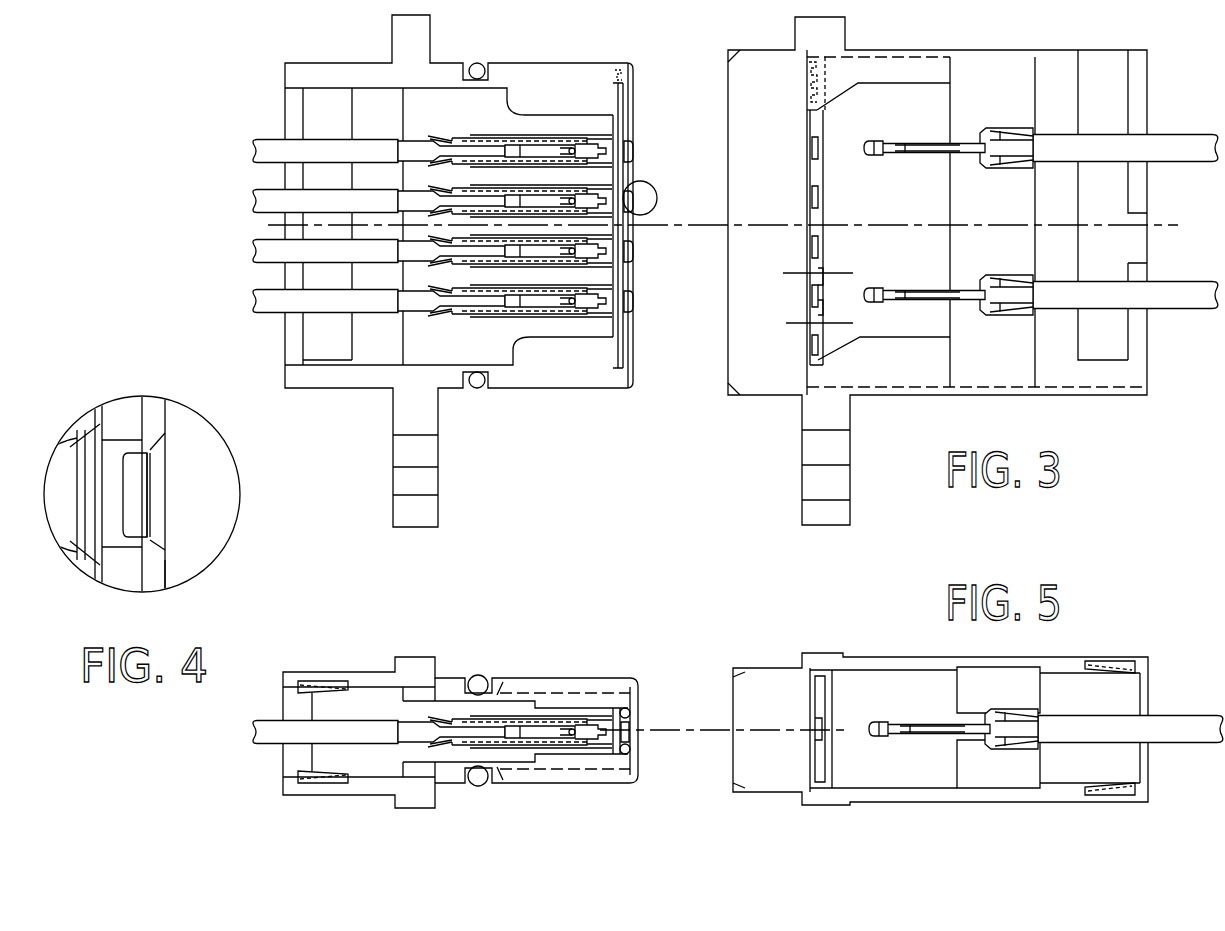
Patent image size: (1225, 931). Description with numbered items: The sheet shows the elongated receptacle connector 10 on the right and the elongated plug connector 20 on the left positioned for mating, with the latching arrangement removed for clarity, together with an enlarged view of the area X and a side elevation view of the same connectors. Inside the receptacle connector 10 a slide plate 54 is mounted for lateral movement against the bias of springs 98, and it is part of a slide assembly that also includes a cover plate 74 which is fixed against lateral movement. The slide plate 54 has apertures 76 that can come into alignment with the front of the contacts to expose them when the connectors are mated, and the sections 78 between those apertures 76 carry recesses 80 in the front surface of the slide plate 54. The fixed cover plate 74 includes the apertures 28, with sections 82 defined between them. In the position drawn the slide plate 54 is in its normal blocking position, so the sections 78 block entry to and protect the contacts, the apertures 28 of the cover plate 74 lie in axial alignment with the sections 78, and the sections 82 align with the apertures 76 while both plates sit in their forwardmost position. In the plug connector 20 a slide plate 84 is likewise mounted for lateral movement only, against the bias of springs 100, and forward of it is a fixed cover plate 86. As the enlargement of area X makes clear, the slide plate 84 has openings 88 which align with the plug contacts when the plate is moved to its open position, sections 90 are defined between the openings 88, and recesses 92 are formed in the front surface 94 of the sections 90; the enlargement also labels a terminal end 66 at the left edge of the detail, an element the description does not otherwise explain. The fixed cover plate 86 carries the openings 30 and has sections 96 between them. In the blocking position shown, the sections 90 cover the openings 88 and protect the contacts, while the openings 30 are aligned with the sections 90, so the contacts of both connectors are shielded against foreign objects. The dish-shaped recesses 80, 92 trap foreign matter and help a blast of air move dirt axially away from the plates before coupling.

In FIG. 5, the receptacle connector 10 is at (895, 804).
In FIG. 5, the plug connector 20 is at (590, 783).
In FIG. 3, the apertures 28 is at (807, 298).
In FIG. 4, the apertures 30 is at (157, 528).
In FIG. 3, the slide plate 54 is at (828, 321).
In FIG. 4, the terminal end 66 is at (90, 445).
In FIG. 3, the cover plate 74 is at (808, 330).
In FIG. 3, the apertures 76 is at (820, 276).
In FIG. 3, the sections 78 is at (820, 308).
In FIG. 3, the recesses 80 is at (815, 248).
In FIG. 3, the sections 82 is at (808, 279).
In FIG. 3, the slide plate 84 is at (626, 327).
In FIG. 4, the slide plate 84 is at (122, 398).
In FIG. 3, the fixed cover plate 86 is at (636, 312).
In FIG. 4, the fixed cover plate 86 is at (155, 405).
In FIG. 4, the openings 88 is at (118, 572).
In FIG. 4, the sections 90 is at (118, 456).
In FIG. 4, the recesses 92 is at (137, 473).
In FIG. 4, the front surface 94 is at (147, 434).
In FIG. 4, the sections 96 is at (158, 572).
In FIG. 3, the springs 98 is at (806, 84).
In FIG. 3, the springs 100 is at (626, 77).
In FIG. 3, the area X is at (652, 184).